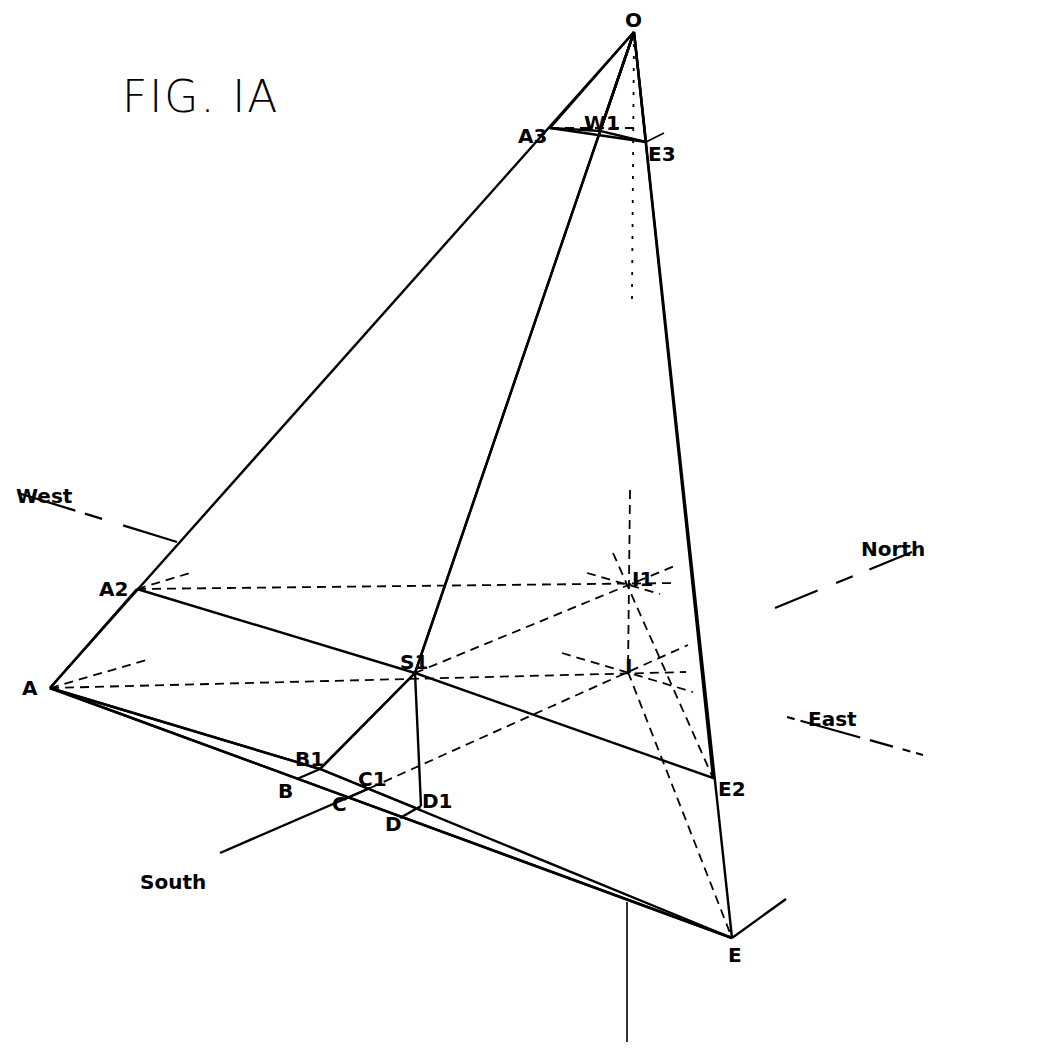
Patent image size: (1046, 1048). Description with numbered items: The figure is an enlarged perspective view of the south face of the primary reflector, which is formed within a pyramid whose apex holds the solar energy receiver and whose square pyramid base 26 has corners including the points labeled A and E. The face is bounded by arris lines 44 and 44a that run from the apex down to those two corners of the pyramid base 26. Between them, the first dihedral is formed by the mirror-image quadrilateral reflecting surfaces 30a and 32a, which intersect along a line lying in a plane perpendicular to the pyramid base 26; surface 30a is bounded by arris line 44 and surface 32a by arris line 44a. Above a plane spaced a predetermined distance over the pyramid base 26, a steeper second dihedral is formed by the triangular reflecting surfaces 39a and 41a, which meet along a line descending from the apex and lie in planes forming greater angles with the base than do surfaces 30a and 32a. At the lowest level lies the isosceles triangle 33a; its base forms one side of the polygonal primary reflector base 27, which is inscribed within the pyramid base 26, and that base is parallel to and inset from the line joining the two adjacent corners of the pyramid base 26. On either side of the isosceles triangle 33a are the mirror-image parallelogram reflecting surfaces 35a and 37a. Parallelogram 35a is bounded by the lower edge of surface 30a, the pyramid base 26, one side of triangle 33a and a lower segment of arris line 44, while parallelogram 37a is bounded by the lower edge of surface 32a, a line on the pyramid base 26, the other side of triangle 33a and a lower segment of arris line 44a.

The pyramid base 26 is at (426, 833).
The primary reflector base 27 is at (489, 841).
The reflecting surface 30a is at (590, 362).
The reflecting surface 32a is at (352, 397).
The isosceles triangle 33a is at (380, 741).
The parallelogram reflecting surface 35a is at (592, 824).
The parallelogram reflecting surface 37a is at (213, 708).
The reflecting surface 39a is at (634, 108).
The reflecting surface 41a is at (597, 93).
The arris line 44 is at (682, 457).
The arris line 44a is at (248, 465).